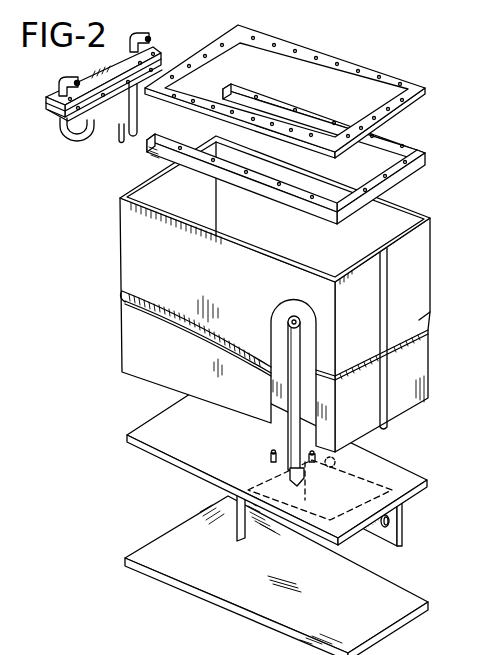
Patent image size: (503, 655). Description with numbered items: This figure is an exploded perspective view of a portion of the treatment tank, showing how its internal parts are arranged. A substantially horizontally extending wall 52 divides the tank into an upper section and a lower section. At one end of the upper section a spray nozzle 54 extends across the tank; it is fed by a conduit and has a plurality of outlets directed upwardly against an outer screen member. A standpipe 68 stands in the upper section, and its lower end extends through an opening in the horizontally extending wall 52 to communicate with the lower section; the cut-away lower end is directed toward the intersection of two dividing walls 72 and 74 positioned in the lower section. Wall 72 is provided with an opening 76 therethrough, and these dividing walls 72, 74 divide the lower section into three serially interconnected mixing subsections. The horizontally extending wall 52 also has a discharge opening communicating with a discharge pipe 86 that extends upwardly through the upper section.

The horizontally extending wall 52 is at (393, 476).
The spray nozzle 54 is at (104, 105).
The standpipe 68 is at (290, 333).
The dividing wall 72 is at (406, 540).
The dividing wall 74 is at (248, 533).
The opening 76 is at (390, 522).
The discharge pipe 86 is at (127, 130).